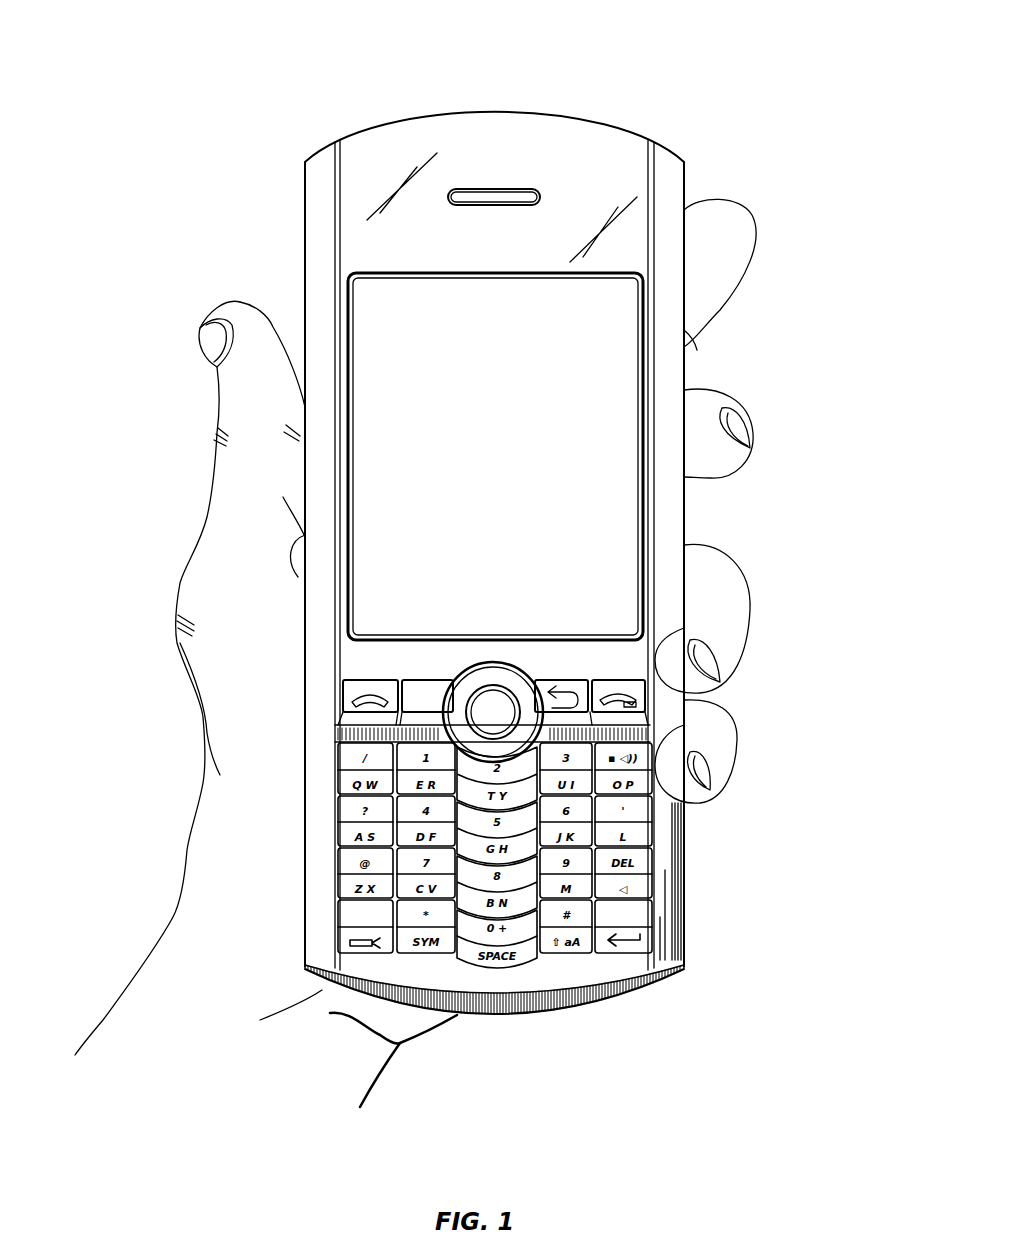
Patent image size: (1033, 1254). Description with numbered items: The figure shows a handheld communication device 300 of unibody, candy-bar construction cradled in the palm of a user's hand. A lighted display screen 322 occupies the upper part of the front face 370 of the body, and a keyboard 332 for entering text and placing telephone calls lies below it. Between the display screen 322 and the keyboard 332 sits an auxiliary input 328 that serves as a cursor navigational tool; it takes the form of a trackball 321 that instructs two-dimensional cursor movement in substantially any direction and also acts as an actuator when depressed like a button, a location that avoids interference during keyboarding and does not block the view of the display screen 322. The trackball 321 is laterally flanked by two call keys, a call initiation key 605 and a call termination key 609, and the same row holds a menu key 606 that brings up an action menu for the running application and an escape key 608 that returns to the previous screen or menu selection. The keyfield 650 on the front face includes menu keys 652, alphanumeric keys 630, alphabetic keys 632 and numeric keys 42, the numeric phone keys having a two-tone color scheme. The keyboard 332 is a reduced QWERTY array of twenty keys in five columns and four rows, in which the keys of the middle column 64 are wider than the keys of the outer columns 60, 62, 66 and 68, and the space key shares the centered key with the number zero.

The handheld communication device 300 is at (632, 56).
The display screen 322 is at (376, 313).
The front face 370 is at (666, 533).
The menu key 606 is at (412, 690).
The menu keys 652 is at (480, 622).
The escape key 608 is at (587, 684).
The call termination key 609 is at (652, 705).
The call initiation key 605 is at (337, 728).
The trackball 321 is at (491, 710).
The auxiliary input 328 is at (640, 807).
The alphabetic keys 632 is at (336, 813).
The alphanumeric keys 630 is at (652, 900).
The keyfield 650 is at (323, 982).
The outer column 60 is at (347, 992).
The outer column 62 is at (400, 997).
The middle column 64 is at (493, 967).
The keyboard 332 is at (508, 992).
The numeric keys 42 is at (517, 977).
The outer column 66 is at (563, 962).
The outer column 68 is at (627, 983).